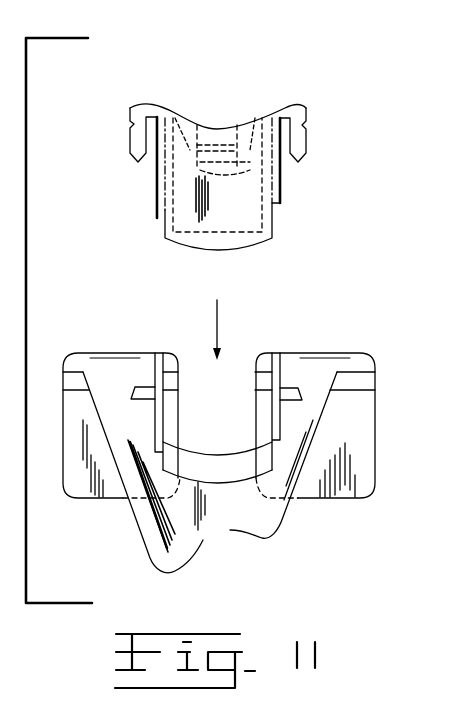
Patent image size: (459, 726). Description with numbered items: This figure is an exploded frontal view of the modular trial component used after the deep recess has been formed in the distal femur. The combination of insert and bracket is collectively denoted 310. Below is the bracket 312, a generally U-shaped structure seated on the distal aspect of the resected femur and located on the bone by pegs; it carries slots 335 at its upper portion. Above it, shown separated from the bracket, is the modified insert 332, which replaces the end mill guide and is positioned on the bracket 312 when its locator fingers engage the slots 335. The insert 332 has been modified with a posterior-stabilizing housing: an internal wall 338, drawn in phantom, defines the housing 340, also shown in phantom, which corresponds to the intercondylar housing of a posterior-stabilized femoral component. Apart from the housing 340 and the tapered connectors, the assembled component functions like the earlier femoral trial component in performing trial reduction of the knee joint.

The combination of insert and bracket 310 is at (116, 113).
The bracket 312 is at (385, 296).
The insert 332 is at (276, 95).
The slots 335 is at (170, 380).
The internal wall 338 is at (237, 173).
The housing 340 is at (214, 165).